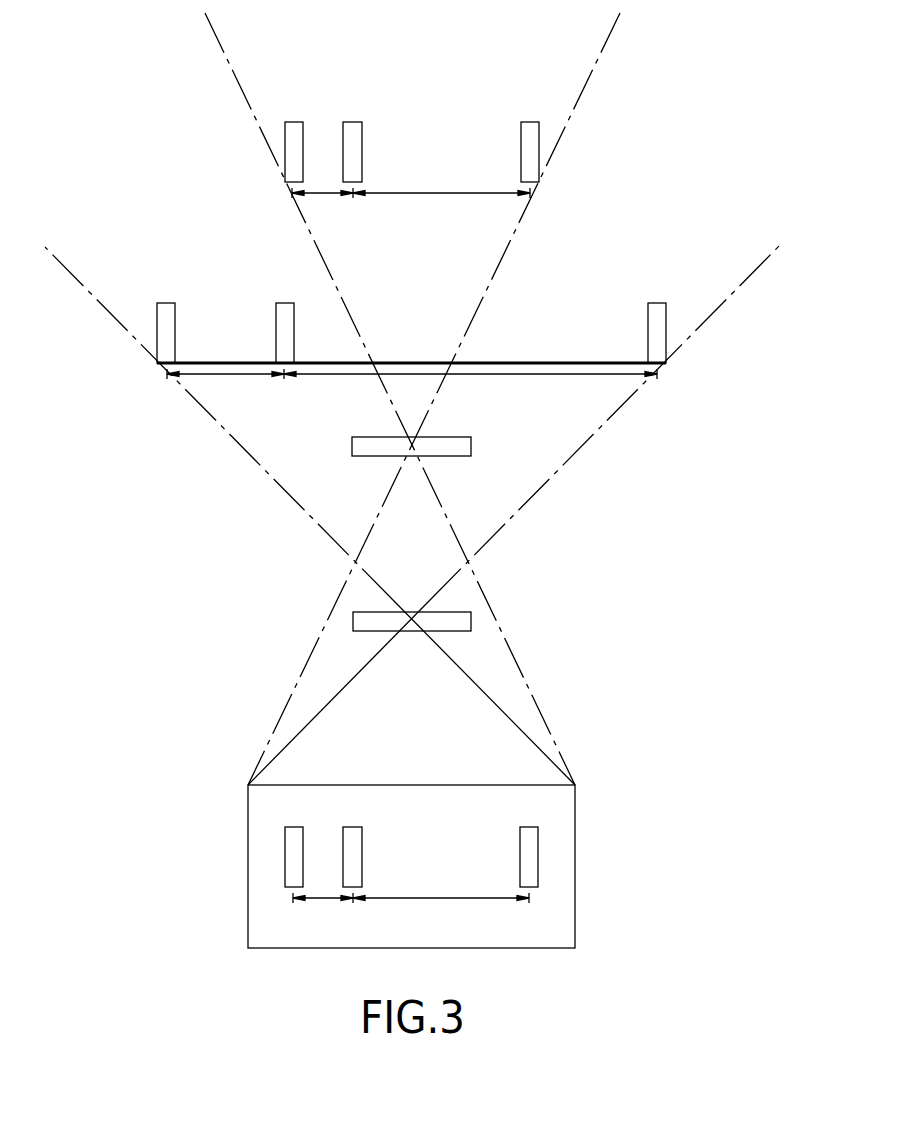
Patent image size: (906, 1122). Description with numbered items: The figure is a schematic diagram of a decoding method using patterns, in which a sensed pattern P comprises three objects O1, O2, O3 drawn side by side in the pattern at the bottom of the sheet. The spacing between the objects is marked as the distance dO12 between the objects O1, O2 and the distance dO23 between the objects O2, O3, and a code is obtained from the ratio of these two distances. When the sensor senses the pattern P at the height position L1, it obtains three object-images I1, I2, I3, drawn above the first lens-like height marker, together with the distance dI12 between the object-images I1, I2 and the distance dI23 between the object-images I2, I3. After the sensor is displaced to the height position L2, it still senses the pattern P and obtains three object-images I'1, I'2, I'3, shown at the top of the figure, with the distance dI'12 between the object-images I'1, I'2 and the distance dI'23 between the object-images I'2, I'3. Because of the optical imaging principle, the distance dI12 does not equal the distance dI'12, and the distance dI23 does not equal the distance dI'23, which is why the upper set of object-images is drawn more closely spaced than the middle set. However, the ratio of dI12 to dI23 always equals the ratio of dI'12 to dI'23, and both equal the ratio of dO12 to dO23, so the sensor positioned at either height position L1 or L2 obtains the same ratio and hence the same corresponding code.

The sensed pattern P is at (423, 866).
The first object O1 is at (296, 840).
The second object O2 is at (354, 840).
The third object O3 is at (531, 840).
The first height position L1 is at (431, 623).
The second height position L2 is at (431, 448).
The first object-image I1 is at (167, 316).
The second object-image I2 is at (286, 316).
The third object-image I3 is at (658, 316).
The first object-image at second height I'1 is at (299, 133).
The second object-image at second height I'2 is at (357, 133).
The third object-image at second height I'3 is at (535, 133).
The distance between objects O1 and O2 dO12 is at (326, 916).
The distance between objects O2 and O3 dO23 is at (441, 916).
The distance between object-images I1 and I2 dI12 is at (225, 391).
The distance between object-images I2 and I3 dI23 is at (470, 390).
The distance between object-images I'1 and I'2 dI'12 is at (319, 210).
The distance between object-images I'2 and I'3 dI'23 is at (441, 210).